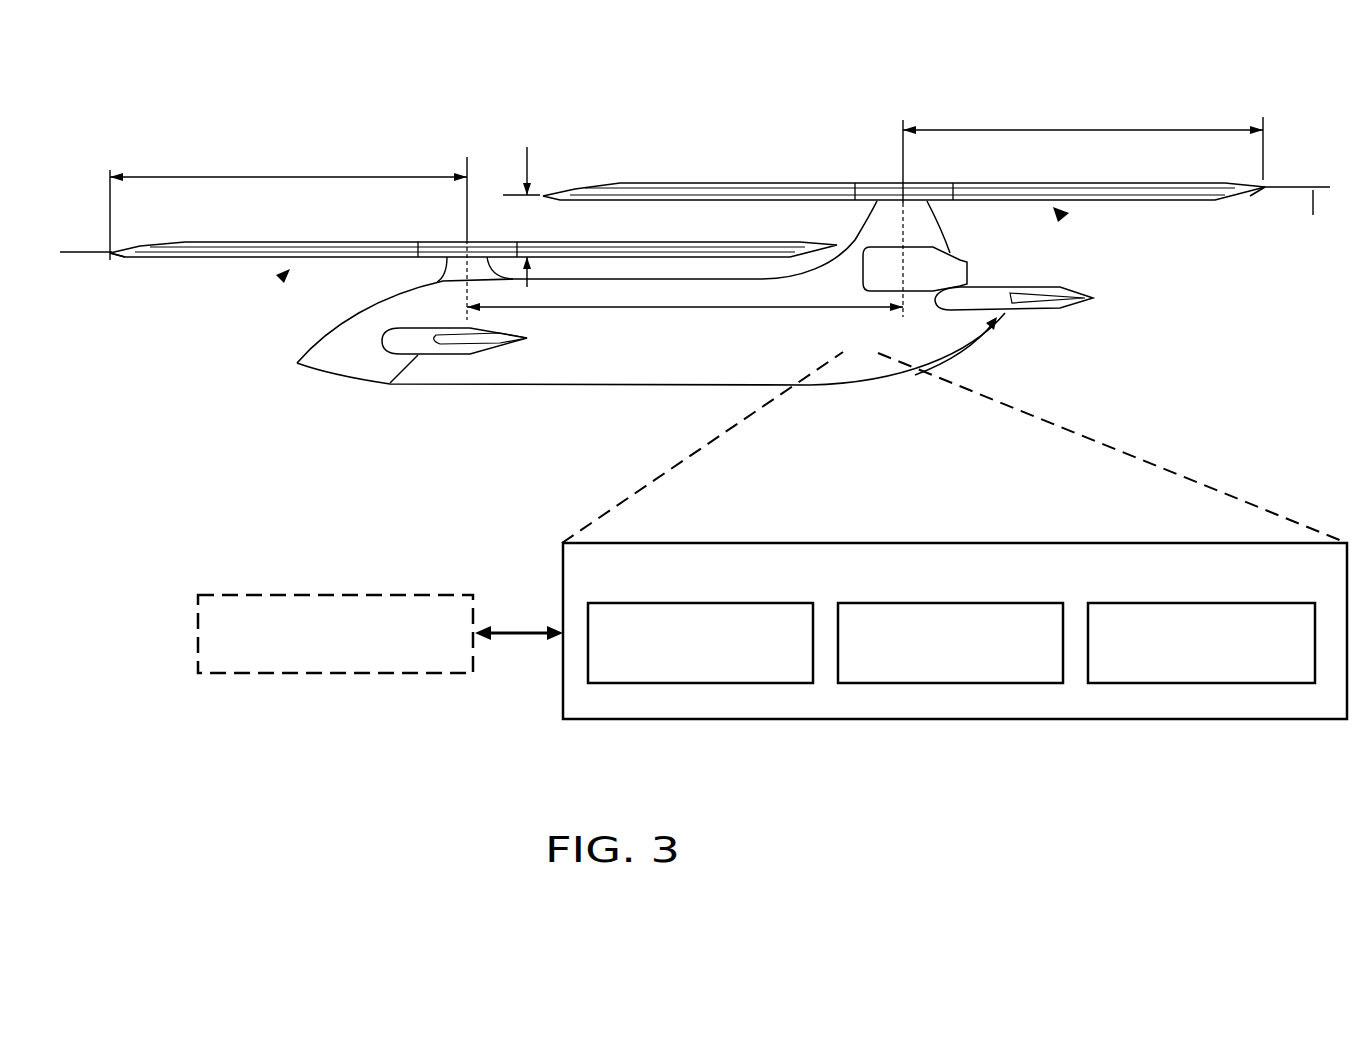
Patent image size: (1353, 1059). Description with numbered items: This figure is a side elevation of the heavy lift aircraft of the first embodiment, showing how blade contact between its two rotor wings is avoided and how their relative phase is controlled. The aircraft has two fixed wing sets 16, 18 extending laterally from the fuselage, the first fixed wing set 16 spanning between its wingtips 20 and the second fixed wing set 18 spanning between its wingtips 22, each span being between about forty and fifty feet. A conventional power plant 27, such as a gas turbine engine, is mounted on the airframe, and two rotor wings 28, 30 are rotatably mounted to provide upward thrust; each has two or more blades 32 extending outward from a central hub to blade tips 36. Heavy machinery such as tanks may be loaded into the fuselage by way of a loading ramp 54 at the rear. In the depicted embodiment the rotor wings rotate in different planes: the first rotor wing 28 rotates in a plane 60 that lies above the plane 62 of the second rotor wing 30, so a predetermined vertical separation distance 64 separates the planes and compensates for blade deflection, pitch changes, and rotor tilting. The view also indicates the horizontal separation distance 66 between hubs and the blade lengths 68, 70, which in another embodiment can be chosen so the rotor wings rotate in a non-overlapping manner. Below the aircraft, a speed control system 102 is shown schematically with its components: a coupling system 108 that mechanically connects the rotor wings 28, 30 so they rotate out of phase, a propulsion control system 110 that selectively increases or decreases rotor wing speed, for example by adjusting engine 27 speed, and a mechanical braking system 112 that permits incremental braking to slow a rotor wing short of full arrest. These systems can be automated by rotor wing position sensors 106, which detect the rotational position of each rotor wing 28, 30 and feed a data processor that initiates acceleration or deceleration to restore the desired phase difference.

The first fixed wing set 16 is at (380, 385).
The second fixed wing set 18 is at (1020, 312).
The wingtips 20 is at (486, 356).
The wingtips 22 is at (1053, 288).
The power plant 27 is at (950, 252).
The first rotor wing 28 is at (283, 276).
The second rotor wing 30 is at (1060, 214).
The blades 32 is at (281, 238).
The blade tips 36 is at (102, 262).
The loading ramp 54 is at (972, 352).
The plane 60 is at (65, 255).
The plane 62 is at (1313, 218).
The vertical separation distance 64 is at (532, 163).
The separation distance 66 is at (688, 309).
The blade length 68 is at (290, 175).
The blade length 70 is at (1083, 130).
The speed control system 102 is at (845, 543).
The position sensors 106 is at (382, 674).
The coupling system 108 is at (753, 683).
The propulsion control system 110 is at (995, 683).
The mechanical braking system 112 is at (1227, 683).